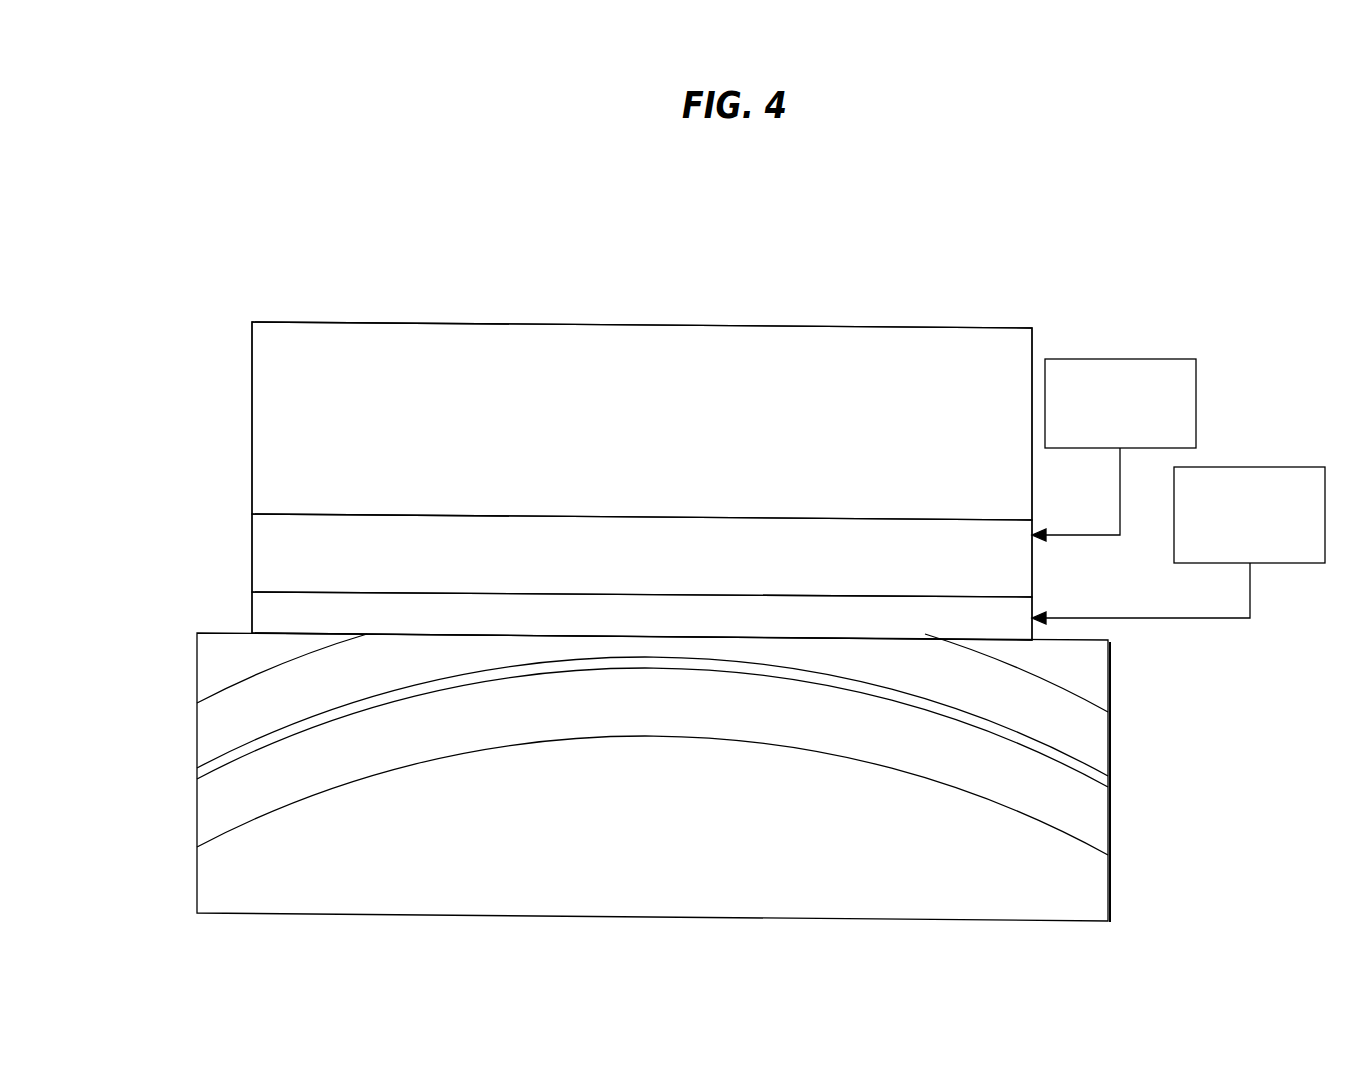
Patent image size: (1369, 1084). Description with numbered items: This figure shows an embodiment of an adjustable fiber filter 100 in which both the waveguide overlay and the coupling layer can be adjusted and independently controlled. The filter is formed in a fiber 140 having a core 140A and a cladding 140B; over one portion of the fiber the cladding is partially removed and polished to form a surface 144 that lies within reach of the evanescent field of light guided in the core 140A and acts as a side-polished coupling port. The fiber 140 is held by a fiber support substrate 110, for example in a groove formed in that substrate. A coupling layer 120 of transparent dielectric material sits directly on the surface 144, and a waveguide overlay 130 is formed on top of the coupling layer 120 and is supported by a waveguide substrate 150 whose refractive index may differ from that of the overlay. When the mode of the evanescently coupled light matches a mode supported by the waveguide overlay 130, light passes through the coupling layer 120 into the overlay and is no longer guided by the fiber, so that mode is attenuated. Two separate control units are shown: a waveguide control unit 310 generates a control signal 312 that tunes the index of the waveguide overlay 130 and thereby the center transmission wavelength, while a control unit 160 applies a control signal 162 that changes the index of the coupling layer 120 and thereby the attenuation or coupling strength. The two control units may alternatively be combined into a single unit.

The fiber filter 100 is at (503, 284).
The fiber support substrate 110 is at (794, 872).
The coupling layer 120 is at (260, 607).
The waveguide overlay 130 is at (260, 540).
The fiber 140 is at (607, 764).
The core 140A is at (222, 755).
The cladding 140B is at (240, 803).
The surface 144 is at (858, 645).
The waveguide substrate 150 is at (710, 340).
The control unit 160 is at (1273, 475).
The control signal 162 is at (1175, 620).
The waveguide control unit 310 is at (1113, 362).
The control signal 312 is at (1122, 478).